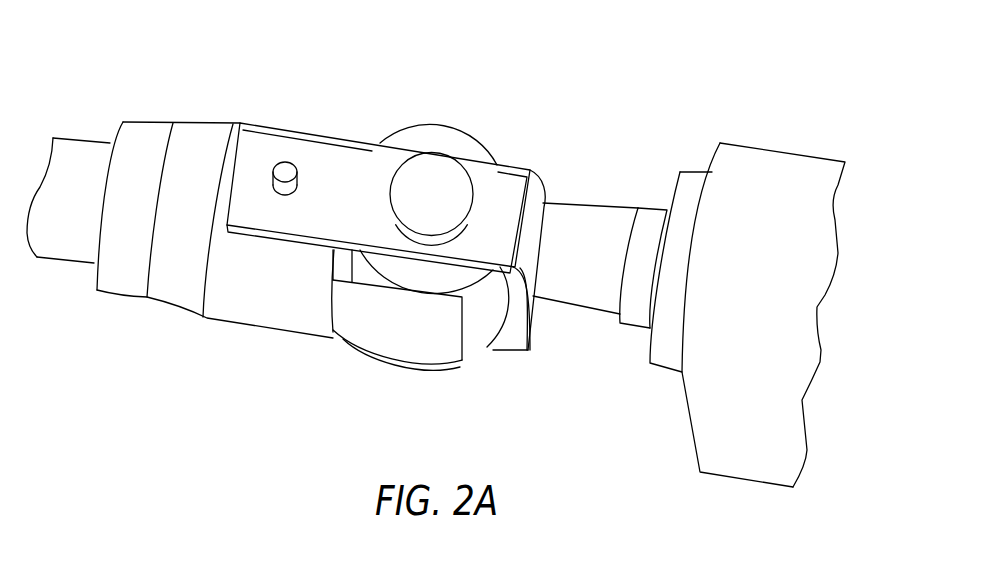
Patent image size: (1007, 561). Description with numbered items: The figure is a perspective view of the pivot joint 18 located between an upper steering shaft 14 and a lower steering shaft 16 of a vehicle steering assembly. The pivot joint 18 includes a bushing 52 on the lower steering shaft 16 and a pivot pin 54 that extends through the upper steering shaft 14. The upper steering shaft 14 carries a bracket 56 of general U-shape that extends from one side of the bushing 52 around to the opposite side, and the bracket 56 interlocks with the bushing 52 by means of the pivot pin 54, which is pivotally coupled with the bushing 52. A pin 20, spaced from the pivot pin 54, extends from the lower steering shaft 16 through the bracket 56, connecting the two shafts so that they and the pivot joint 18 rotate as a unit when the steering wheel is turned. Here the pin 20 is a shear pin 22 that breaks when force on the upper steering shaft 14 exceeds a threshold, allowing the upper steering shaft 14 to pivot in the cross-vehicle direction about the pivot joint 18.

The upper steering shaft 14 is at (583, 232).
The lower steering shaft 16 is at (58, 242).
The pivot joint 18 is at (490, 50).
The pin 20 is at (283, 160).
The shear pin 22 is at (285, 178).
The bushing 52 is at (470, 332).
The pivot pin 54 is at (440, 170).
The bracket 56 is at (323, 158).